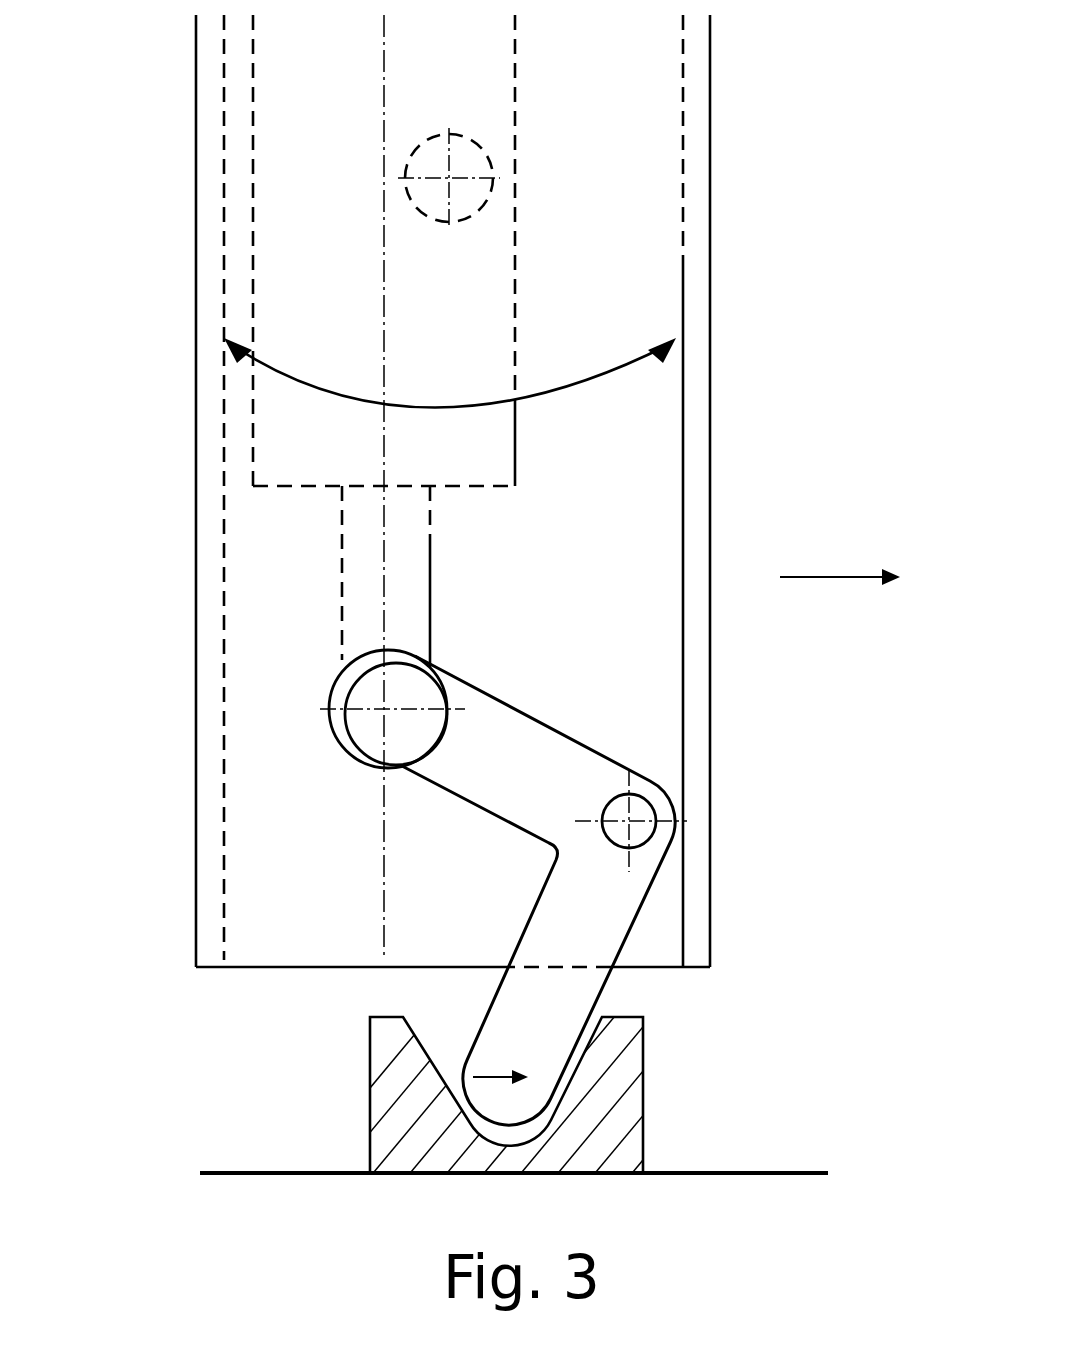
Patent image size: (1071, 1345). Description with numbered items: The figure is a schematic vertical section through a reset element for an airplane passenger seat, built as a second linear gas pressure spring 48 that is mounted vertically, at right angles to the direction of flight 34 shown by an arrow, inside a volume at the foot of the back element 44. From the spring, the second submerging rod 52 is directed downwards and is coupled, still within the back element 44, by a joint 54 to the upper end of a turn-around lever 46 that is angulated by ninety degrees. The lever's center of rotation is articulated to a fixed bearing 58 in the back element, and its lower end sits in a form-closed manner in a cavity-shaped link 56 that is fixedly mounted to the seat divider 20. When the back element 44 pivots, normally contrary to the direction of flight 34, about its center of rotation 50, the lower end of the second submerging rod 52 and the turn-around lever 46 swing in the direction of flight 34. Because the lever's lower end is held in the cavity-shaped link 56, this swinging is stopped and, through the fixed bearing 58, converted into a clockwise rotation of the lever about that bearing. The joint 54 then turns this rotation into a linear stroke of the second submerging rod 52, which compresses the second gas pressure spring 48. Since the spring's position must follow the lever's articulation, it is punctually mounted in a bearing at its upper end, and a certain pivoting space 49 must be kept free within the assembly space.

The seat divider 20 is at (290, 1208).
The direction of flight 34 is at (830, 577).
The back element 44 is at (695, 320).
The turn-around lever 46 is at (588, 917).
The second linear gas pressure spring 48 is at (285, 160).
The pivoting space 49 is at (618, 413).
The center of rotation of the back element 50 is at (470, 165).
The second submerging rod 52 is at (357, 588).
The joint 54 is at (383, 708).
The cavity-shaped link 56 is at (383, 1087).
The fixed bearing 58 is at (647, 795).